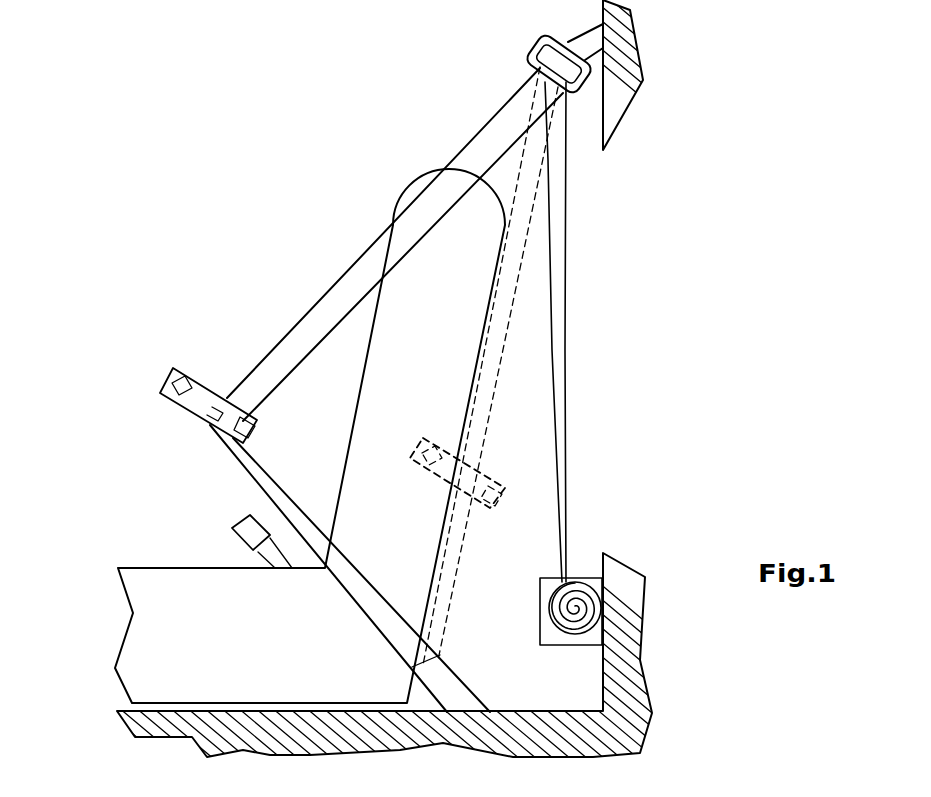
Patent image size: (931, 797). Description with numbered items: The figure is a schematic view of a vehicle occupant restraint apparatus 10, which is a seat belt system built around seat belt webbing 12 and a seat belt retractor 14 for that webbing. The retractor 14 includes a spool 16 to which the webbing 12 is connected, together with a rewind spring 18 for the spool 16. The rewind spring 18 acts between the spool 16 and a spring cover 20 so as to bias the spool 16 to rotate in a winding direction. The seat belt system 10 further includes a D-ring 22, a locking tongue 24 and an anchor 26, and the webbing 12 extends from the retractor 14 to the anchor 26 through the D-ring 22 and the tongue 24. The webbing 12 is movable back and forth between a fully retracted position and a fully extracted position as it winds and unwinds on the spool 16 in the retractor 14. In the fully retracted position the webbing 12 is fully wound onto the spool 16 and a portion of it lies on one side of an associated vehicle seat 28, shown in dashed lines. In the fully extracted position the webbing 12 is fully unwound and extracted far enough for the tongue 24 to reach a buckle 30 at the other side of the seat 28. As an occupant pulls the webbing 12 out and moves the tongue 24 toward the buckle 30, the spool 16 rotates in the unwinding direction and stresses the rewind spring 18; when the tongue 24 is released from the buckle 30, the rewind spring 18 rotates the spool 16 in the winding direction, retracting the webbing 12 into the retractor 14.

The vehicle occupant restraint apparatus 10 is at (372, 118).
The seat belt webbing 12 is at (560, 305).
The seat belt retractor 14 is at (575, 568).
The spool 16 is at (592, 606).
The rewind spring 18 is at (583, 632).
The spring cover 20 is at (550, 597).
The D-ring 22 is at (540, 50).
The locking tongue 24 is at (165, 384).
The anchor 26 is at (440, 692).
The vehicle seat 28 is at (147, 568).
The buckle 30 is at (238, 522).